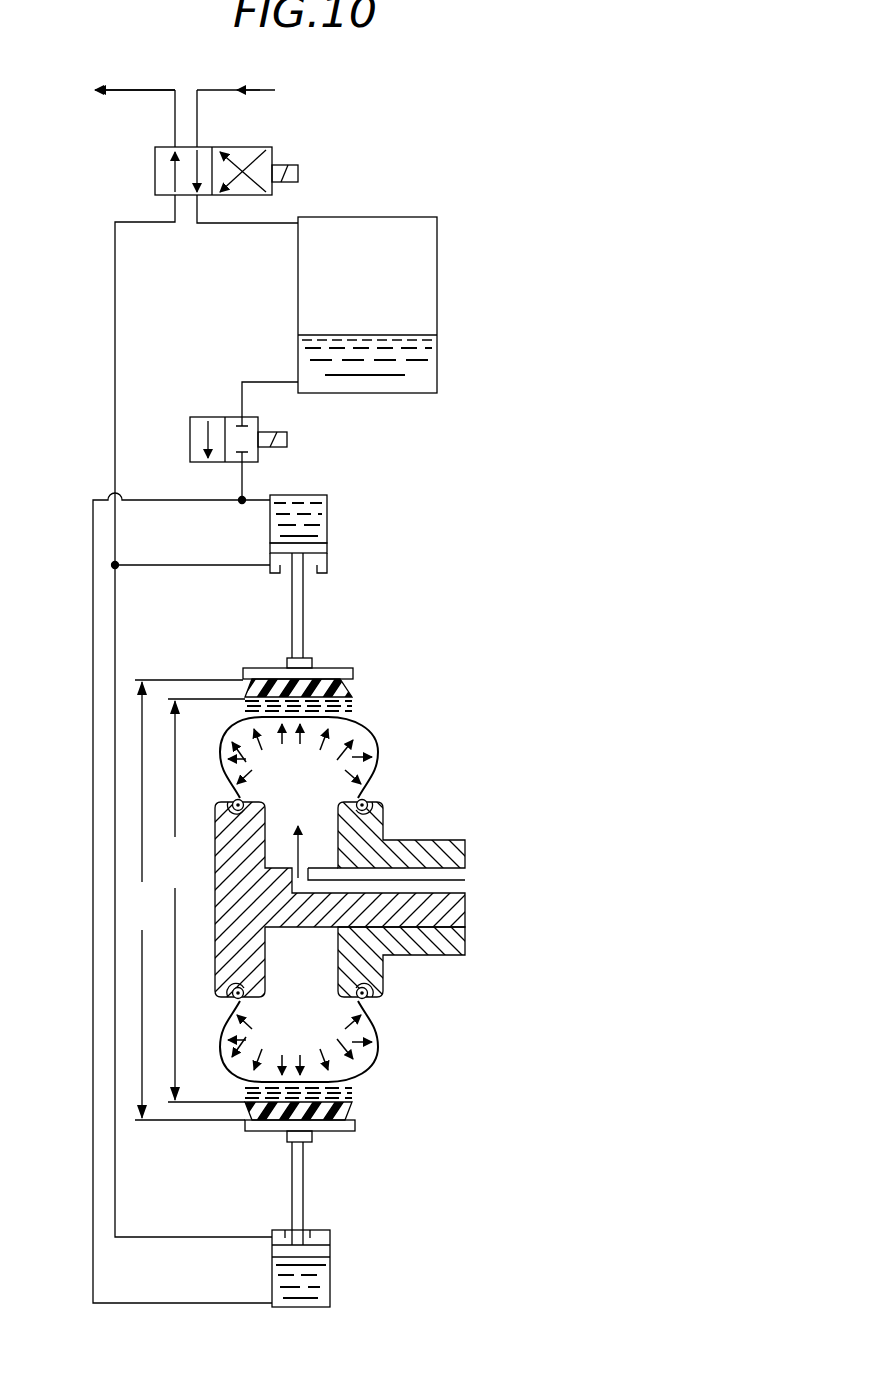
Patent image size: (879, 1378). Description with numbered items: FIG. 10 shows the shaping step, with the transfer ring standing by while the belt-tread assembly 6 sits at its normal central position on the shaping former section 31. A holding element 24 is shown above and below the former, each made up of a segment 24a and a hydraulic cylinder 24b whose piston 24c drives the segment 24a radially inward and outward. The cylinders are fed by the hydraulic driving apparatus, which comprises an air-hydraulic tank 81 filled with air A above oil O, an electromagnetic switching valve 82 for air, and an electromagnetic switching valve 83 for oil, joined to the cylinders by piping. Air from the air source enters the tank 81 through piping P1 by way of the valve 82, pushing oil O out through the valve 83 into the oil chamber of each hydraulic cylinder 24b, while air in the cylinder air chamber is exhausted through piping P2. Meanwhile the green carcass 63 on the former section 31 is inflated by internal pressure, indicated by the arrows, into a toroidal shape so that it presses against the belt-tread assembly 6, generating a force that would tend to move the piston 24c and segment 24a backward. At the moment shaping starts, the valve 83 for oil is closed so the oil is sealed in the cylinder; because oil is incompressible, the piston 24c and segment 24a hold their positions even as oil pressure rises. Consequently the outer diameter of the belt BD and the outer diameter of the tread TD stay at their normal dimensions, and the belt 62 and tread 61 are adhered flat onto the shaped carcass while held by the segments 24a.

The electromagnetic switching valve for air 82 is at (273, 152).
The air-hydraulic tank 81 is at (417, 217).
The air A is at (415, 290).
The oil O is at (420, 367).
The piping p1 P1 is at (220, 224).
The piping p2 P2 is at (115, 262).
The electromagnetic switching valve for oil 83 is at (287, 439).
The holding element 24 is at (382, 583).
The segment 24a is at (340, 668).
The hydraulic cylinder 24b is at (327, 520).
The piston 24c is at (327, 553).
The belt-tread assembly 6 is at (367, 891).
The tread 61 is at (352, 690).
The belt 62 is at (352, 710).
The green carcass 63 is at (378, 768).
The shaping former section 31 is at (406, 978).
The outer diameter of tread TD is at (185, 900).
The outer diameter of belt BD is at (200, 900).